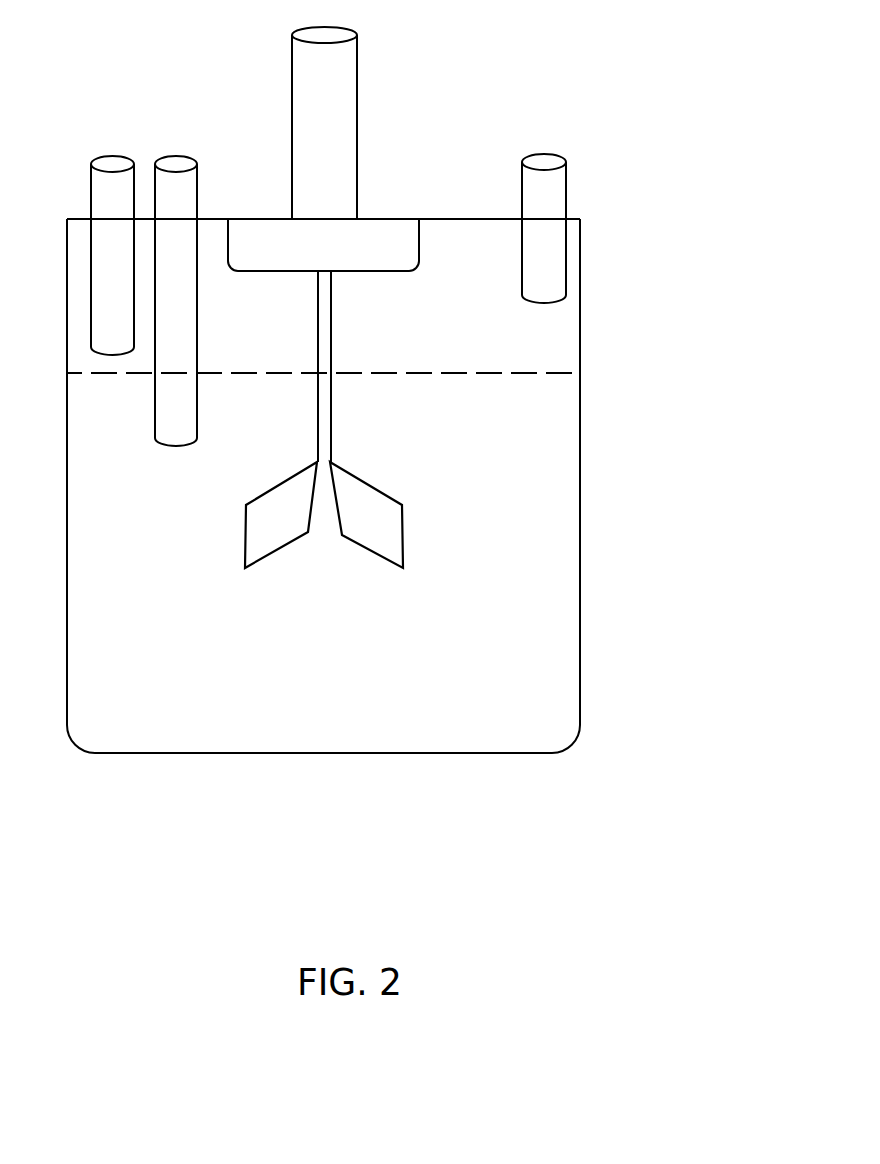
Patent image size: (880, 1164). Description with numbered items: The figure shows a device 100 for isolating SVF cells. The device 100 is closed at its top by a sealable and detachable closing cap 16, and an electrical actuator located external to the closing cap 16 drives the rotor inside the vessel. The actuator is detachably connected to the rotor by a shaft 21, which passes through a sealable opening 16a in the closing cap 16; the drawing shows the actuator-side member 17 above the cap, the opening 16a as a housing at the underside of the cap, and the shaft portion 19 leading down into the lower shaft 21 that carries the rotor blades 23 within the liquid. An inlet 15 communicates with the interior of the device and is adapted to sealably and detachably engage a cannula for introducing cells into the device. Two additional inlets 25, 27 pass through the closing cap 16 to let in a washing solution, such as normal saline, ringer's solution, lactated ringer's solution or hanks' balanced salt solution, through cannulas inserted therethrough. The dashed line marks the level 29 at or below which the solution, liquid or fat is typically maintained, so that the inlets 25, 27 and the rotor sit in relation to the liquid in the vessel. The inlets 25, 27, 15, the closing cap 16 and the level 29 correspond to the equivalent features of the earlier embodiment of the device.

The device 100 is at (651, 206).
The inlet 15 is at (568, 218).
The closing cap 16 is at (323, 202).
The sealable opening 16a is at (323, 245).
The drive shaft 17 is at (344, 123).
The shaft coupling 19 is at (381, 322).
The shaft 21 is at (345, 417).
The impeller blades 23 is at (367, 537).
The inlet 25 is at (112, 229).
The inlet 27 is at (176, 274).
The level 29 is at (350, 486).